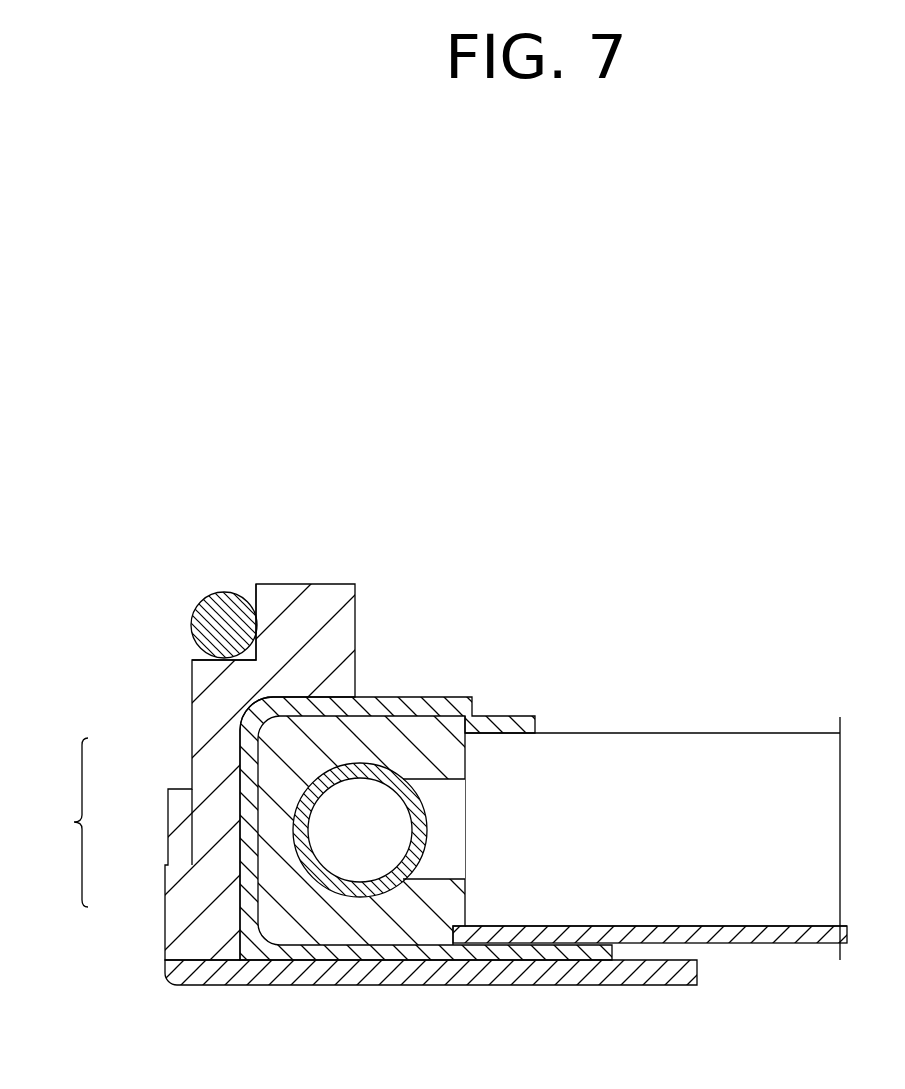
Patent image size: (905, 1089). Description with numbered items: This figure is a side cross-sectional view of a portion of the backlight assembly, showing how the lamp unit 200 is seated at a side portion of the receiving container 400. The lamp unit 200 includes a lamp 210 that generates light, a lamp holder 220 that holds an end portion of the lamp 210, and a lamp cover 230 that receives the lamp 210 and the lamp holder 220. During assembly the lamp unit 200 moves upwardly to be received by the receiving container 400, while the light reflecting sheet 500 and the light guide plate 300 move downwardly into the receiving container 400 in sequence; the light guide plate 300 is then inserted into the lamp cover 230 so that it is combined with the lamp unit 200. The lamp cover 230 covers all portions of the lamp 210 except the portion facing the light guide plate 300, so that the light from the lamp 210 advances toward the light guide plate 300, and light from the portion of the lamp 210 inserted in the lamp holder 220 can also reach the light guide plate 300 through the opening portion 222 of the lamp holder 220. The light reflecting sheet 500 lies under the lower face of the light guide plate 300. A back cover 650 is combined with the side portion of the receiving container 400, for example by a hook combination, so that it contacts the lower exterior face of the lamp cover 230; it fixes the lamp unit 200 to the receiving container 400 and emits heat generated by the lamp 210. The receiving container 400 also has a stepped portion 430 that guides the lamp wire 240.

The lamp unit 200 is at (54, 822).
The lamp 210 is at (297, 823).
The lamp holder 220 is at (283, 742).
The opening portion 222 is at (448, 822).
The lamp cover 230 is at (417, 702).
The lamp wire 240 is at (193, 622).
The light guide plate 300 is at (718, 750).
The receiving container 400 is at (332, 592).
The stepped portion 430 is at (257, 596).
The light reflecting sheet 500 is at (742, 932).
The back cover 650 is at (360, 976).